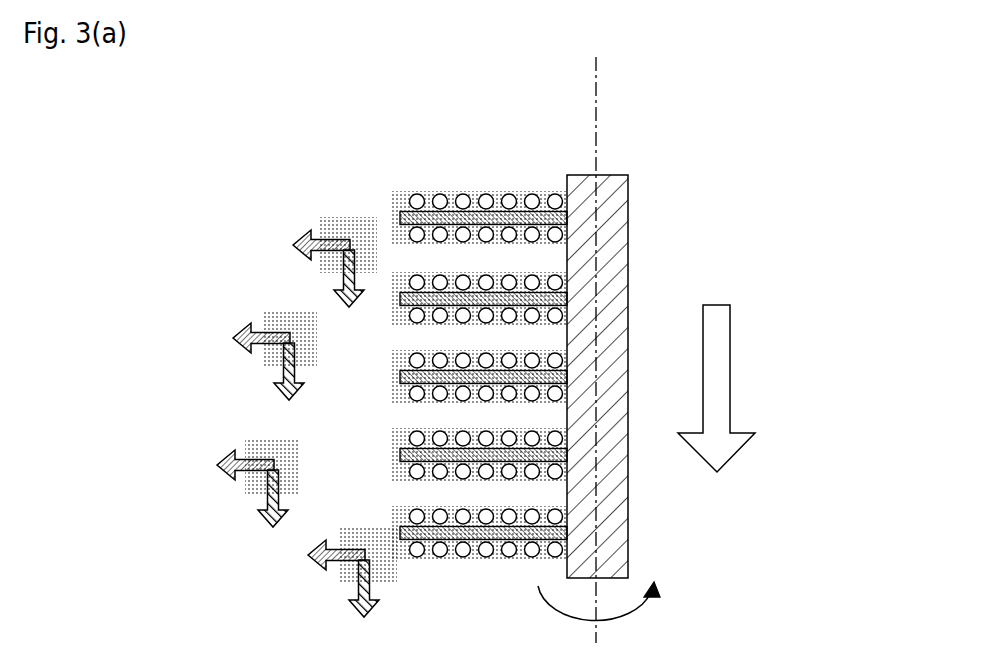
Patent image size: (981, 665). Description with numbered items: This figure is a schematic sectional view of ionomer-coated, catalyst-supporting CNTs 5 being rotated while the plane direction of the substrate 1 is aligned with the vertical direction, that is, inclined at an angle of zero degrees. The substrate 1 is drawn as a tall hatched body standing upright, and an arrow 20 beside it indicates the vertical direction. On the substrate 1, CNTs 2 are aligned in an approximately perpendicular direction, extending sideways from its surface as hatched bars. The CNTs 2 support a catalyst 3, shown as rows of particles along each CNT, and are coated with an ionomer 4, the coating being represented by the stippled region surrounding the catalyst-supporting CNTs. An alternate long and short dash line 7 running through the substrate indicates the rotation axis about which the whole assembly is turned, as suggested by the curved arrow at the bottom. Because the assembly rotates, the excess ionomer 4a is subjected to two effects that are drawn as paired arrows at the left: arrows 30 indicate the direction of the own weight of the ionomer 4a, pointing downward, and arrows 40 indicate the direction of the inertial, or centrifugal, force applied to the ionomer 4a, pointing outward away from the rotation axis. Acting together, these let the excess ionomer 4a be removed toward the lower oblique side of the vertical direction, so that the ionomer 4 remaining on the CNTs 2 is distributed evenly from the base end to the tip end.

The substrate 1 is at (615, 175).
The CNTs 2 is at (522, 194).
The catalyst 3 is at (435, 194).
The ionomer 4 is at (495, 203).
The ionomer 4a is at (353, 227).
The ionomer-coated, catalyst-supporting CNTs 5 is at (430, 120).
The rotation axis 7 is at (597, 75).
The vertical direction arrow 20 is at (717, 380).
The own weight direction arrows 30 is at (343, 285).
The centrifugal force direction arrows 40 is at (320, 240).